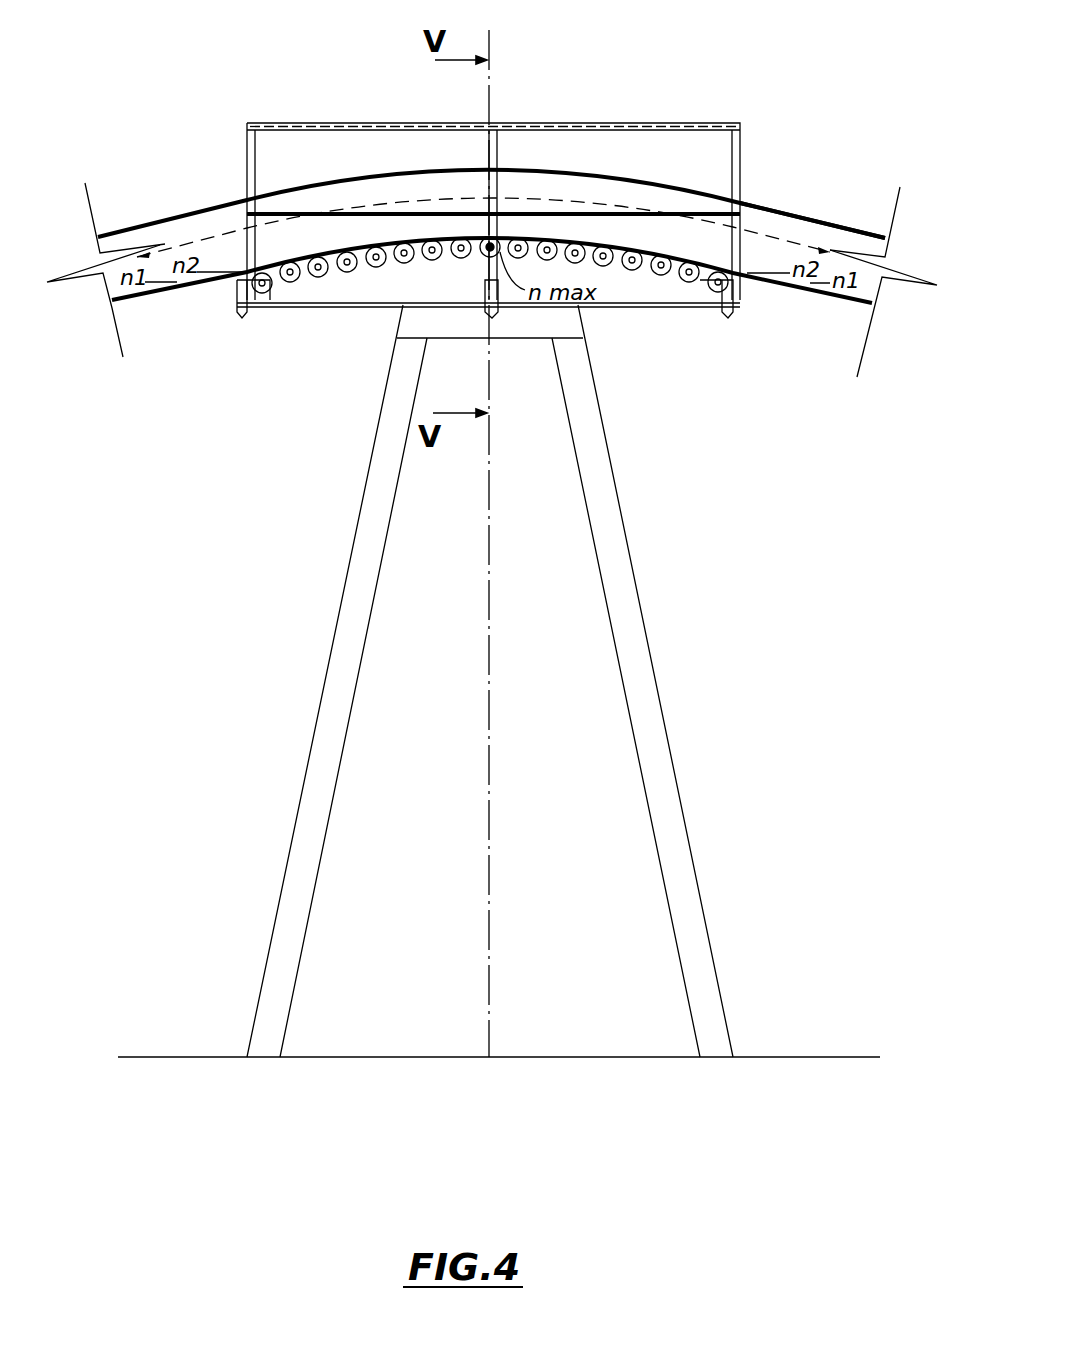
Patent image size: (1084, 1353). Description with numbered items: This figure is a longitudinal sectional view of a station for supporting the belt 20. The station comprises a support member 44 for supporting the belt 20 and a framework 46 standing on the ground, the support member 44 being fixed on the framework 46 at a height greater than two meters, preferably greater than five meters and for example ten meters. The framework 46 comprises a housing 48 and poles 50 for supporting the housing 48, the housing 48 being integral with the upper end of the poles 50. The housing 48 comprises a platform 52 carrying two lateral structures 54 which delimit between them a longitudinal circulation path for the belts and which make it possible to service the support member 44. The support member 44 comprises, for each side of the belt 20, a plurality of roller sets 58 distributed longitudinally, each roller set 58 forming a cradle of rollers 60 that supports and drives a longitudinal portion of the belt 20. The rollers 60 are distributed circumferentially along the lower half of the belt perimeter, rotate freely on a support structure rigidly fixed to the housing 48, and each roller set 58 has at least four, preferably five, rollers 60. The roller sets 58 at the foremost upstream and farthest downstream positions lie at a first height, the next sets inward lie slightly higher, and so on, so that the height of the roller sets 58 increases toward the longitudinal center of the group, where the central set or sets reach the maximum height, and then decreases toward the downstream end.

The belt 20 is at (803, 218).
The support member 44 is at (207, 142).
The framework 46 is at (785, 787).
The housing 48 is at (740, 320).
The poles 50 is at (323, 763).
The platform 52 is at (302, 308).
The lateral structures 54 is at (738, 169).
The roller sets 58 is at (382, 267).
The rollers 60 is at (465, 240).